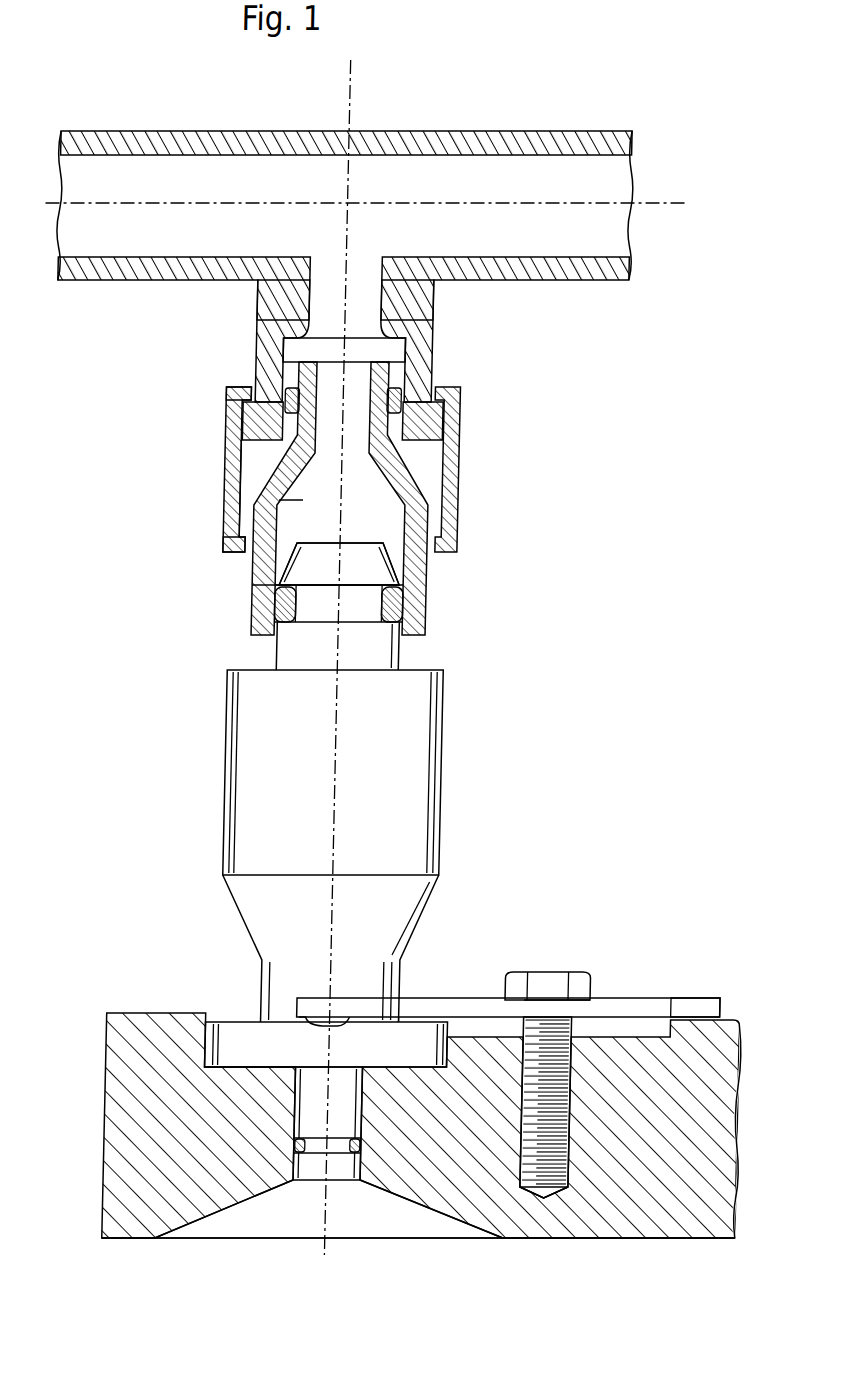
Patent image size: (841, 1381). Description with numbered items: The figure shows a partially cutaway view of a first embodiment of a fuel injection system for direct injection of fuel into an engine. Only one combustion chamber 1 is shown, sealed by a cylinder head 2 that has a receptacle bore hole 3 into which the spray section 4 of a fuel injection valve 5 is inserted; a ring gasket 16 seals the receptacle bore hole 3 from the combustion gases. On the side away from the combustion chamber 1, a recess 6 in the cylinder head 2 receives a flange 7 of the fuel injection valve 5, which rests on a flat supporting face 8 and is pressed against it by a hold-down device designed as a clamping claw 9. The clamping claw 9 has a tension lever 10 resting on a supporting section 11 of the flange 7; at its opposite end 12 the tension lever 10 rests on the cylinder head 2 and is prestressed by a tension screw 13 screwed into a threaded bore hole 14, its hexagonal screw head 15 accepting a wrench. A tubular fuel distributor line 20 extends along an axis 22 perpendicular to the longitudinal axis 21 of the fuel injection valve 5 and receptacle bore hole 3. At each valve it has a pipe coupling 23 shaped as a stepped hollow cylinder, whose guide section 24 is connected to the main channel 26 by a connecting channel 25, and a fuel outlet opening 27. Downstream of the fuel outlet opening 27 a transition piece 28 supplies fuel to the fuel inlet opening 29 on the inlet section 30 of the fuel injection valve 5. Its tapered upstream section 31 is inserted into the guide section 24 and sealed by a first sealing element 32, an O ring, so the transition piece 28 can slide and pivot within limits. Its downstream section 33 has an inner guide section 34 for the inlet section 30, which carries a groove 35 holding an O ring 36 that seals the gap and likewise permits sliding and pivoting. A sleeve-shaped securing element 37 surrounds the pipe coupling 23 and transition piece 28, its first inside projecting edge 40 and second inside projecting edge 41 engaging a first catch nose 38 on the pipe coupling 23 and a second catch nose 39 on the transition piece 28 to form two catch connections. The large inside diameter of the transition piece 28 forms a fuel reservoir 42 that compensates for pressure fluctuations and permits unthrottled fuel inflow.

The combustion chamber 1 is at (364, 1289).
The cylinder head 2 is at (126, 1024).
The receptacle bore hole 3 is at (326, 1182).
The spray section 4 is at (354, 1125).
The fuel injection valve 5 is at (258, 746).
The recess 6 is at (236, 1020).
The flange 7 is at (424, 1024).
The supporting face 8 is at (257, 1074).
The clamping claw 9 is at (626, 968).
The tension lever 10 is at (484, 998).
The supporting section 11 is at (336, 1010).
The end 12 is at (716, 999).
The tension screw 13 is at (571, 1050).
The threaded bore hole 14 is at (568, 1198).
The screw head 15 is at (569, 972).
The ring gasket 16 is at (362, 1166).
The fuel distributor line 20 is at (344, 238).
The longitudinal axis 21 is at (364, 98).
The axis 22 is at (680, 202).
The pipe coupling 23 is at (425, 310).
The guide section 24 is at (411, 357).
The connecting channel 25 is at (295, 290).
The main channel 26 is at (194, 162).
The fuel outlet opening 27 is at (295, 347).
The transition piece 28 is at (460, 511).
The fuel inlet opening 29 is at (372, 543).
The inlet section 30 is at (387, 567).
The upstream section 31 is at (454, 464).
The first sealing element 32 is at (442, 418).
The downstream section 33 is at (284, 606).
The guide section 34 is at (286, 550).
The groove 35 is at (302, 627).
The O ring 36 is at (423, 604).
The securing element 37 is at (235, 468).
The first catch nose 38 is at (241, 418).
The second catch nose 39 is at (240, 493).
The first inside projecting edge 40 is at (236, 393).
The second inside projecting edge 41 is at (235, 546).
The fuel reservoir 42 is at (322, 513).